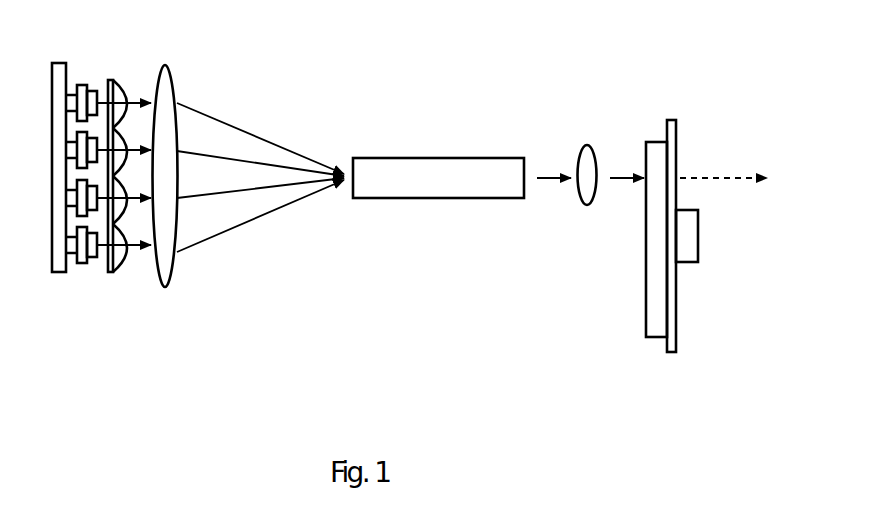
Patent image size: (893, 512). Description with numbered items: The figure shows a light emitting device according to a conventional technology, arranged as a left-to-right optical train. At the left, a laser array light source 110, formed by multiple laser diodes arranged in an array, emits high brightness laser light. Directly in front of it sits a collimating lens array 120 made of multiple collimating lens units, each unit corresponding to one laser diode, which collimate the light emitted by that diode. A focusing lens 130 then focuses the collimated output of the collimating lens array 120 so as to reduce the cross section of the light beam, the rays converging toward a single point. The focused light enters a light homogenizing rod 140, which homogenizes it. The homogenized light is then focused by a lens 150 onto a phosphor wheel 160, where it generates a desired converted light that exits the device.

The laser array light source 110 is at (85, 87).
The collimating lens array 120 is at (117, 274).
The focusing lens 130 is at (167, 277).
The light homogenizing rod 140 is at (487, 187).
The lens 150 is at (588, 185).
The phosphor wheel 160 is at (653, 302).